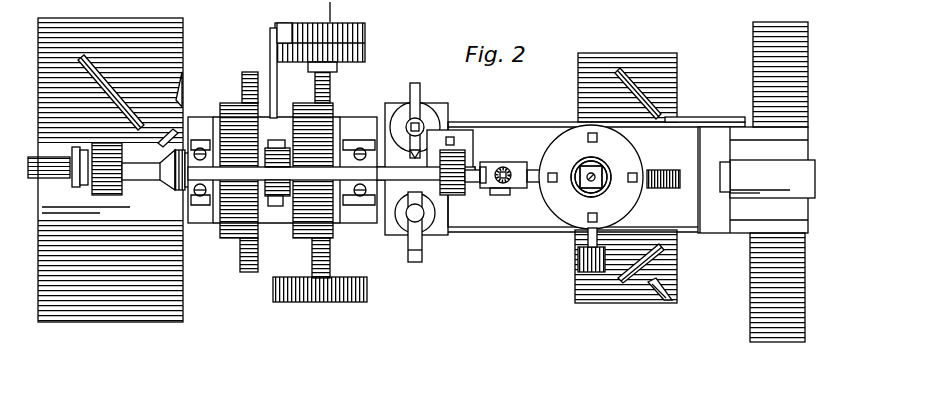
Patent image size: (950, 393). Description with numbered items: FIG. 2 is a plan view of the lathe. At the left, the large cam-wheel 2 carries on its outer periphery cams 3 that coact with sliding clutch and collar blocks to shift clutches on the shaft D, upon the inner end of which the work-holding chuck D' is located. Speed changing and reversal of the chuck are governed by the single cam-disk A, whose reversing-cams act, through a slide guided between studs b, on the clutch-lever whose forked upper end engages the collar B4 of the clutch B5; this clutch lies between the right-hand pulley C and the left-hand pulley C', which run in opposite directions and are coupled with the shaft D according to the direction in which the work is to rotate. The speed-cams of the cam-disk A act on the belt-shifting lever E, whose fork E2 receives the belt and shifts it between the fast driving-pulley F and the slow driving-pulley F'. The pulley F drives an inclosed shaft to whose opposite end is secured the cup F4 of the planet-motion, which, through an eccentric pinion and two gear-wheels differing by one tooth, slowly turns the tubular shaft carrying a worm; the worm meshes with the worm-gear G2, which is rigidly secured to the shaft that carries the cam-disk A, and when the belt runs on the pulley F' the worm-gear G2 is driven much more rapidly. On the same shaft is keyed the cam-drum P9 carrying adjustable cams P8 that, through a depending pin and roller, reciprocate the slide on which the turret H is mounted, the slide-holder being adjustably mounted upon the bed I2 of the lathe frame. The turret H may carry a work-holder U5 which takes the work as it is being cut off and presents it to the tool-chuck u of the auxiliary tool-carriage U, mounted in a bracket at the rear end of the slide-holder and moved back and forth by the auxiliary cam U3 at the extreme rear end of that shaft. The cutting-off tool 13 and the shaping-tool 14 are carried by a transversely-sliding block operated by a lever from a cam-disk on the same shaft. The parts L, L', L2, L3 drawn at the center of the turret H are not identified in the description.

The cam-wheel 2 is at (110, 170).
The cams 3 is at (108, 92).
The shaft D is at (109, 165).
The cam-disk A is at (242, 87).
The left-hand pulley C' is at (239, 170).
The right-hand pulley C is at (313, 190).
The collar B4 is at (277, 140).
The clutch B5 is at (258, 240).
The belt-shifting lever E is at (277, 80).
The fork E2 is at (270, 33).
The fast driving-pulley F is at (333, 42).
The slow driving-pulley F' is at (335, 51).
The cup F4 is at (322, 302).
The worm-gear G2 is at (330, 90).
The studs b is at (323, 12).
The cutting-off tool 13 is at (420, 93).
The shaping-tool 14 is at (422, 252).
The work-holding chuck D' is at (424, 202).
The bed I2 is at (510, 193).
The turret H is at (591, 177).
The hub L is at (594, 169).
The outer ring L' is at (584, 182).
The inner ring L2 is at (606, 184).
The hub block L3 is at (600, 190).
The work-holder U5 is at (658, 172).
The auxiliary cam U3 is at (753, 93).
The auxiliary tool-carriage U is at (772, 179).
The tool-chuck u is at (722, 180).
The cam-drum P9 is at (602, 68).
The cams P8 is at (663, 108).